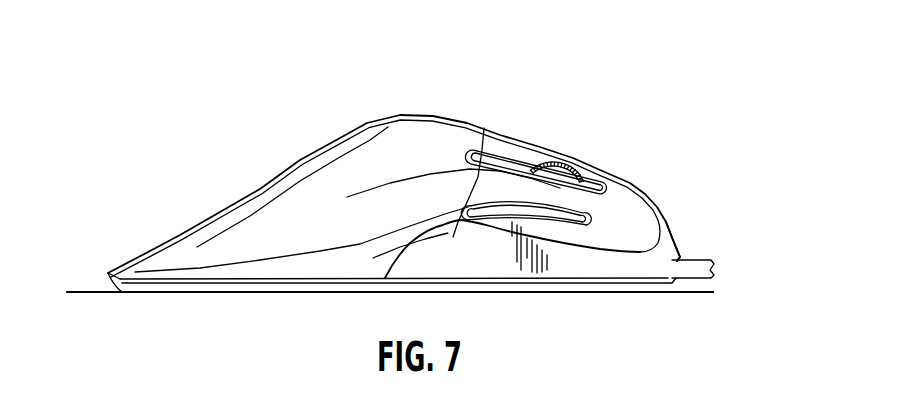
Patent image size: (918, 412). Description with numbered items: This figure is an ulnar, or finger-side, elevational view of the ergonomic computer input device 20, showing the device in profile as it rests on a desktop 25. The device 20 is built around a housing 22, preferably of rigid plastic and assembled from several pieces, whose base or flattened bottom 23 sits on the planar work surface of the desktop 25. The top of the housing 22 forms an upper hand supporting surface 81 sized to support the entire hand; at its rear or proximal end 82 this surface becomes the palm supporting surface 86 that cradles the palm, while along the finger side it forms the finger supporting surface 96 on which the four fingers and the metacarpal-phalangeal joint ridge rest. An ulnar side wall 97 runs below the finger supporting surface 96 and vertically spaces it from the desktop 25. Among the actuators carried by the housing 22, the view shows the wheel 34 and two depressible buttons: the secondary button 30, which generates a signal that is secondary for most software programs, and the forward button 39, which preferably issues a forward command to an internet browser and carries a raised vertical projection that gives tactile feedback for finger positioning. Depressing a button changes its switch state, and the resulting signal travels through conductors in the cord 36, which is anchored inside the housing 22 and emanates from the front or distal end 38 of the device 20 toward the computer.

The ergonomic computer input device 20 is at (553, 93).
The housing 22 is at (375, 131).
The flattened bottom 23 is at (242, 292).
The desktop 25 is at (85, 292).
The secondary button 30 is at (636, 222).
The wheel 34 is at (558, 162).
The cord 36 is at (704, 262).
The distal end 38 is at (684, 257).
The forward button 39 is at (556, 231).
The upper hand supporting surface 81 is at (367, 182).
The proximal end 82 is at (110, 272).
The palm supporting surface 86 is at (292, 203).
The finger supporting surface 96 is at (402, 148).
The ulnar side wall 97 is at (486, 267).